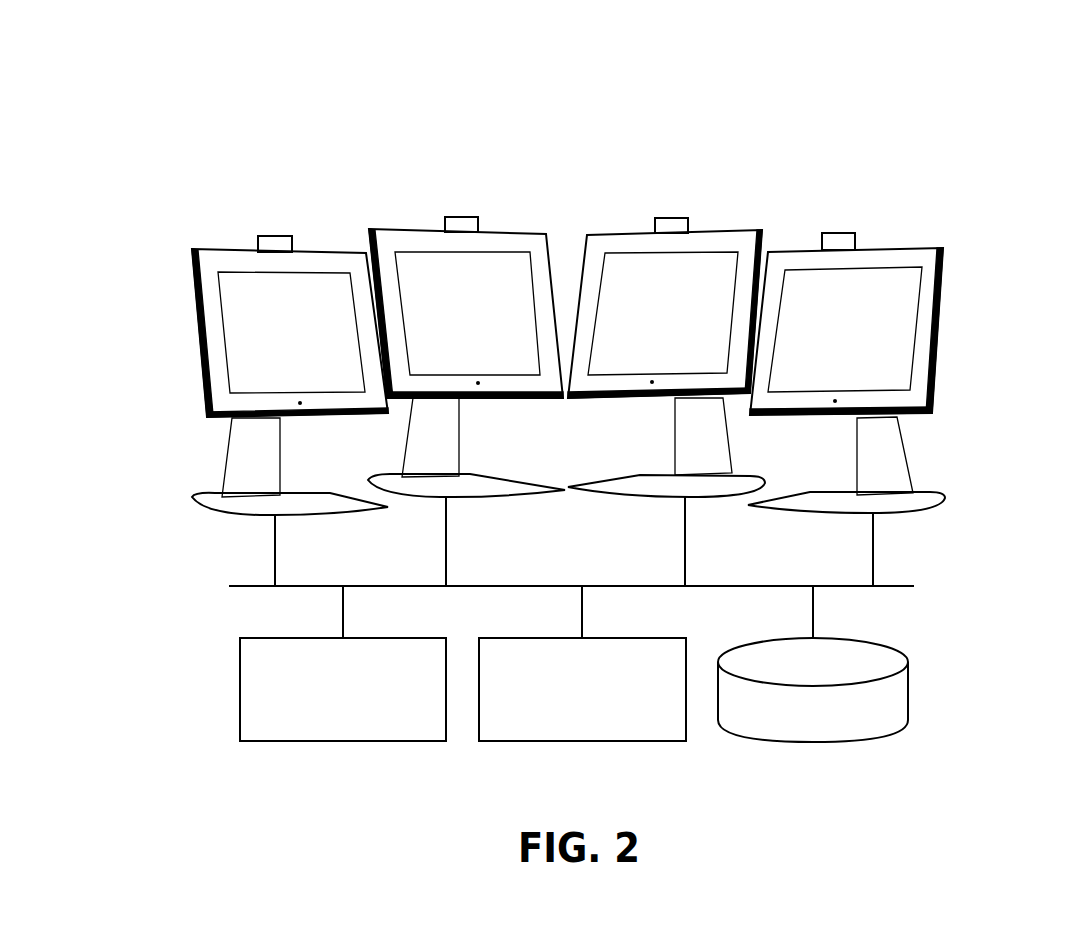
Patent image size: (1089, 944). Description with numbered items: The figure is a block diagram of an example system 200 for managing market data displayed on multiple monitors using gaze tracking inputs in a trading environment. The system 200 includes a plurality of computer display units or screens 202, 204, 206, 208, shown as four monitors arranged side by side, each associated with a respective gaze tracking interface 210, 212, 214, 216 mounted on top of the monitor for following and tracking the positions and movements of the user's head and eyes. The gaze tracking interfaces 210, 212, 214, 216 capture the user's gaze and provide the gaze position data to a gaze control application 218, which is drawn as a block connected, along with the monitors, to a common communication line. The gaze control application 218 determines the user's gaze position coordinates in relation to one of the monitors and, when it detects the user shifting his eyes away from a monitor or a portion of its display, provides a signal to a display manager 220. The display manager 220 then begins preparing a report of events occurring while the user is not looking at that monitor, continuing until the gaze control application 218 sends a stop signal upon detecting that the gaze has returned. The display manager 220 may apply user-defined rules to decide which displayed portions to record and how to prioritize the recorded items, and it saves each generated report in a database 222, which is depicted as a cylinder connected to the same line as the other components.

The system 200 is at (952, 87).
The computer display unit 202 is at (343, 302).
The computer display unit 204 is at (523, 287).
The computer display unit 206 is at (730, 281).
The computer display unit 208 is at (908, 299).
The gaze tracking interface 210 is at (270, 236).
The gaze tracking interface 212 is at (460, 217).
The gaze tracking interface 214 is at (665, 218).
The gaze tracking interface 216 is at (835, 233).
The gaze control application 218 is at (363, 727).
The display manager 220 is at (601, 727).
The database 222 is at (899, 723).